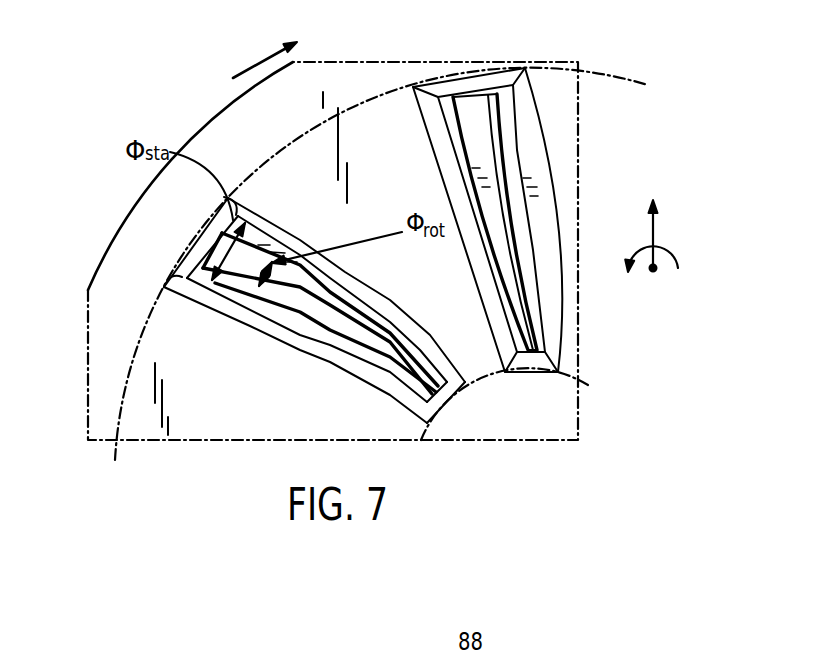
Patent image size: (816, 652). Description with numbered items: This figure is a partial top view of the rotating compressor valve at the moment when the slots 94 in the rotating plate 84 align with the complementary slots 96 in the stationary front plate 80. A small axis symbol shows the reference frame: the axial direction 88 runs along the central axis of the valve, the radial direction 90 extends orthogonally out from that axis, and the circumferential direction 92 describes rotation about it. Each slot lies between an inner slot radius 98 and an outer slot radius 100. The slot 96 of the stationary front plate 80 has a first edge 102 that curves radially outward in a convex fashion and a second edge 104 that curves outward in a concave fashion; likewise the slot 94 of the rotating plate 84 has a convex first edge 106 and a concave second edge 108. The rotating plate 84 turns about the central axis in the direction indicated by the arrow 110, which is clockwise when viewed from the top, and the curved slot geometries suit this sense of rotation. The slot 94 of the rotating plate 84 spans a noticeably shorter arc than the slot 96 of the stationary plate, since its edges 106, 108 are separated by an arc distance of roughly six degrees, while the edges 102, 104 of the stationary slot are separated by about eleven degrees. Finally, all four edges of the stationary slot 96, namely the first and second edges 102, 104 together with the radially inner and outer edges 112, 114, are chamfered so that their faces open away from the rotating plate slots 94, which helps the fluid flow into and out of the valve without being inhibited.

The stationary front plate 80 is at (105, 390).
The rotating plate 84 is at (332, 303).
The axial direction 88 is at (657, 272).
The radial direction 90 is at (657, 219).
The circumferential direction 92 is at (673, 247).
The slots of the rotating plate 94 is at (228, 272).
The slots of the stationary front and rear plates 96 is at (259, 220).
The inner slot radius 98 is at (565, 373).
The outer slot radius 100 is at (393, 80).
The first edge of the stationary plate slot 102 is at (310, 243).
The second edge of the stationary plate slot 104 is at (257, 323).
The first edge of the rotating plate slot 106 is at (350, 290).
The second edge of the rotating plate slot 108 is at (313, 322).
The arrow 110 is at (262, 63).
The radially inner edge of the stationary plate slot 112 is at (447, 398).
The radially outer edge of the stationary plate slot 114 is at (197, 233).